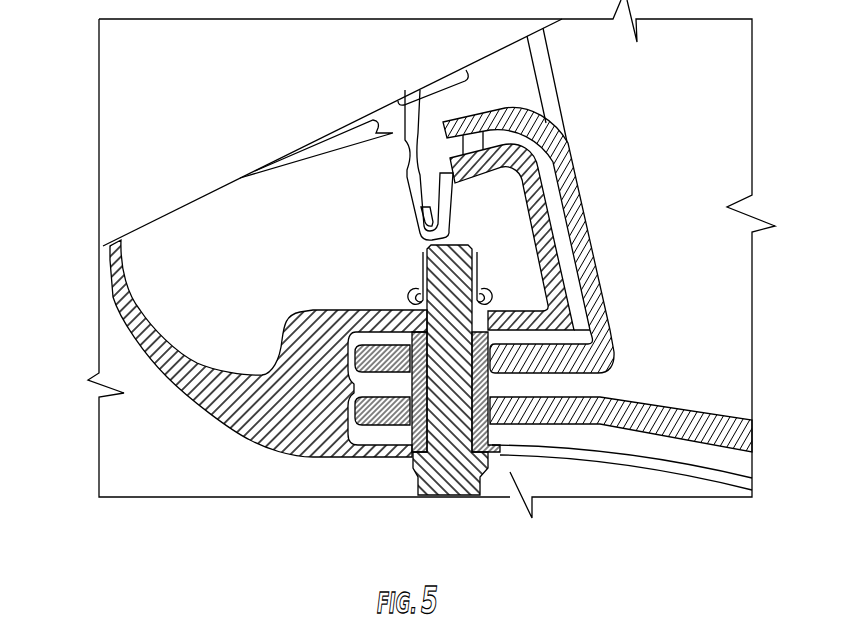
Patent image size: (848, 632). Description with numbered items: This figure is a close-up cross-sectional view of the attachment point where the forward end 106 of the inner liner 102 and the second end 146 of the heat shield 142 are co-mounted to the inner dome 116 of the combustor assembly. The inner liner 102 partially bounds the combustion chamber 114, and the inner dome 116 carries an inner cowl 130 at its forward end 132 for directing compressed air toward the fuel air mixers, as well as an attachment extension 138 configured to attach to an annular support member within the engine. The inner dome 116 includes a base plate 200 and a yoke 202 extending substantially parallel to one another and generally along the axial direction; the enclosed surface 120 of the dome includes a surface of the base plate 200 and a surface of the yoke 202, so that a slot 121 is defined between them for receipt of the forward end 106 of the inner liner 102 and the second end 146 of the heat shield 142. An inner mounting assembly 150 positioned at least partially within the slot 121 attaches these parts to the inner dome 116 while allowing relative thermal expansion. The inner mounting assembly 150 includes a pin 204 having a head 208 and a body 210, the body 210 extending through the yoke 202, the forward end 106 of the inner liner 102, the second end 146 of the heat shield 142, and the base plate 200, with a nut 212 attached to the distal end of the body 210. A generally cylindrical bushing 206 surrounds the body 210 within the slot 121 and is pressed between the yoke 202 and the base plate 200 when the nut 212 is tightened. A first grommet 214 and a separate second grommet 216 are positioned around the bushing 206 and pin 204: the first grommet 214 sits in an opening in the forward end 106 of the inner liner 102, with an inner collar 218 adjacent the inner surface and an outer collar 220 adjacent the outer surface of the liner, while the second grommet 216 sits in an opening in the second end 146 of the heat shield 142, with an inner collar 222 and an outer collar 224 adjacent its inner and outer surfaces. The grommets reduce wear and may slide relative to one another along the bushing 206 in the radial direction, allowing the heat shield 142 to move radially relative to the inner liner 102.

The inner liner 102 is at (725, 427).
The forward end of the inner liner 106 is at (405, 442).
The combustion chamber 114 is at (730, 133).
The inner dome 116 is at (247, 418).
The enclosed surface 120 is at (350, 347).
The slot 121 is at (512, 393).
The inner cowl 130 is at (142, 362).
The forward end of the inner dome 132 is at (87, 303).
The attachment extension 138 is at (678, 465).
The heat shield 142 is at (577, 203).
The second end of the heat shield 146 is at (536, 372).
The inner mounting assembly 150 is at (483, 505).
The base plate 200 is at (486, 340).
The yoke 202 is at (408, 458).
The pin 204 is at (444, 460).
The bushing 206 is at (485, 350).
The head 208 is at (458, 484).
The body 210 is at (400, 308).
The nut 212 is at (407, 247).
The first grommet 214 is at (398, 435).
The second grommet 216 is at (381, 336).
The inner collar 218 is at (520, 388).
The outer collar 220 is at (512, 427).
The inner collar 222 is at (525, 358).
The outer collar 224 is at (512, 385).